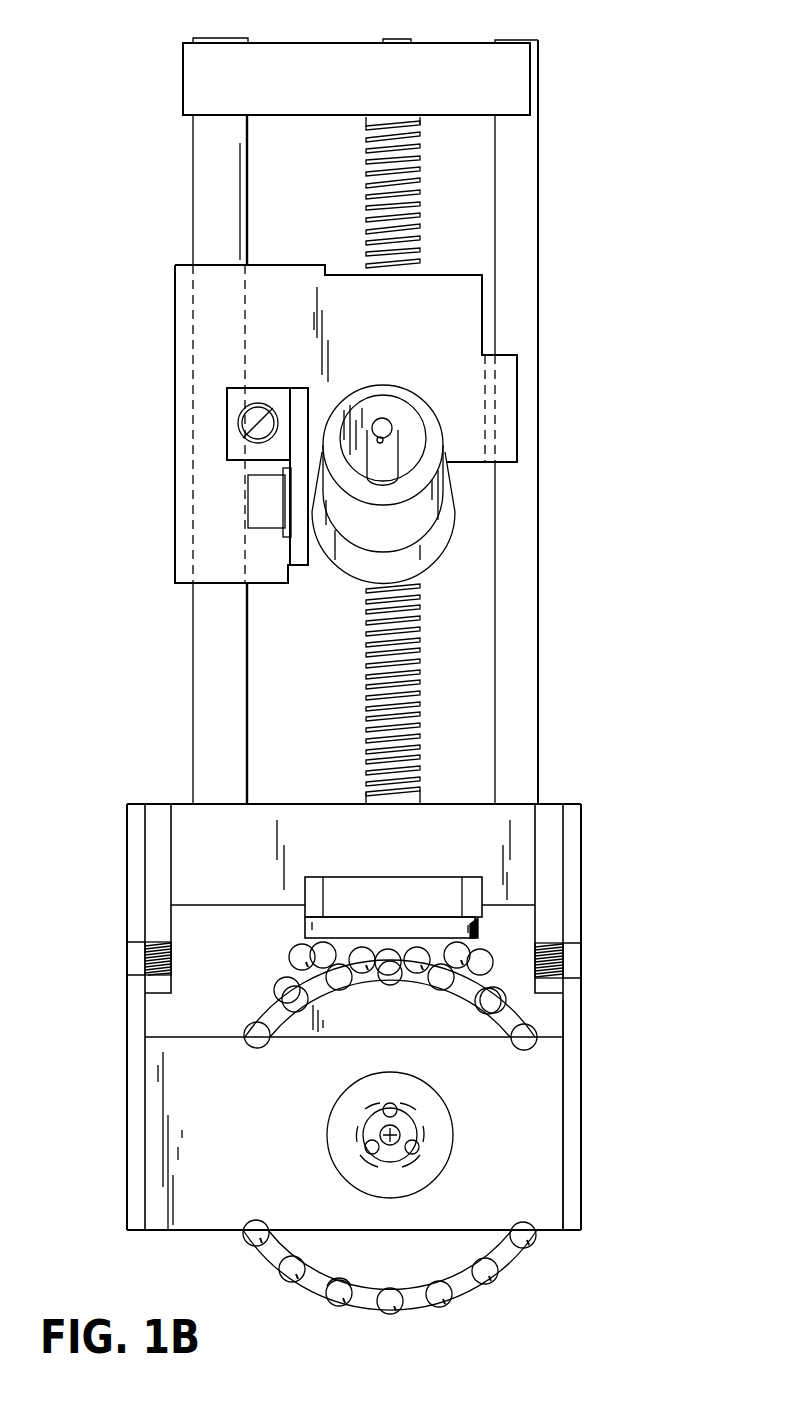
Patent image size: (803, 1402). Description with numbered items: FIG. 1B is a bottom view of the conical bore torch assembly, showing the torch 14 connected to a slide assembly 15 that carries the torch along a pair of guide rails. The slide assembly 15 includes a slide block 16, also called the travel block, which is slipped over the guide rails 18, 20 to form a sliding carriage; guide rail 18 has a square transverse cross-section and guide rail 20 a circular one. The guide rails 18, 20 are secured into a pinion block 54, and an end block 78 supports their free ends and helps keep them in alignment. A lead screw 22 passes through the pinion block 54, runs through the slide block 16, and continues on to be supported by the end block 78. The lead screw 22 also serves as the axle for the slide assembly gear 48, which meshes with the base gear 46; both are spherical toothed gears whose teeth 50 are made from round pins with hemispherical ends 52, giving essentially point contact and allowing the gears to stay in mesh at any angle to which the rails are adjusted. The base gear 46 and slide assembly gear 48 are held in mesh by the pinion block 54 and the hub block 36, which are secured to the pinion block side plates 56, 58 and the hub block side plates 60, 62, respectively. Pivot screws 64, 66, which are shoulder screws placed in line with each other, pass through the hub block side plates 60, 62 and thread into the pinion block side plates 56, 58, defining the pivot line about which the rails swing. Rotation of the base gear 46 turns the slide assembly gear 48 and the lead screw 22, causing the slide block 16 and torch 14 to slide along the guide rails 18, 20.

The torch 14 is at (428, 437).
The slide assembly 15 is at (568, 338).
The slide block 16 is at (394, 353).
The guide rail 18 is at (520, 182).
The guide rail 20 is at (203, 158).
The lead screw 22 is at (366, 645).
The hub block 36 is at (257, 1100).
The base gear 46 is at (275, 1251).
The slide assembly gear 48 is at (476, 933).
The teeth 50 is at (337, 1286).
The hemispherical ends 52 is at (332, 1303).
The pinion block 54 is at (460, 853).
The pinion block side plate 56 is at (572, 832).
The pinion block side plate 58 is at (130, 852).
The hub block side plate 60 is at (572, 1088).
The hub block side plate 62 is at (131, 1110).
The pivot screw 64 is at (570, 958).
The pivot screw 66 is at (132, 958).
The end block 78 is at (443, 62).